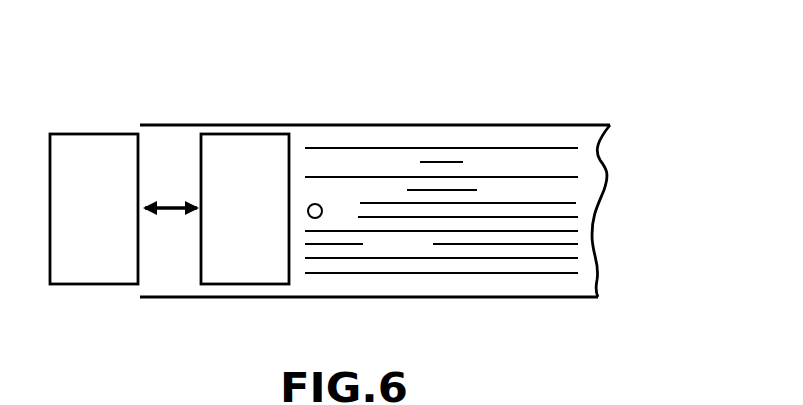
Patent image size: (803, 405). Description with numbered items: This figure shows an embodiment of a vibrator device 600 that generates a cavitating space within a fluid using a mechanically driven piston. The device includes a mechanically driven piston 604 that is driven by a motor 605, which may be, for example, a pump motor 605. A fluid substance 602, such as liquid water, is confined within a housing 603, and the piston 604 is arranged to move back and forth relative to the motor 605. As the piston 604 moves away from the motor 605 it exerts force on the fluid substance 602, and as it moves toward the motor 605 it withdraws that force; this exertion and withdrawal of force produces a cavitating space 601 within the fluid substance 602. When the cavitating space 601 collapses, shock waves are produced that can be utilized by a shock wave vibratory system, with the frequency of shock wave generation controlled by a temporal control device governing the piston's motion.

The drive assembly 600 is at (627, 63).
The marker / reference point 601 is at (308, 215).
The recording layer tracks 602 is at (571, 197).
The outer layers 603 is at (451, 118).
The movable element 604 is at (292, 140).
The actuator block 605 is at (93, 133).